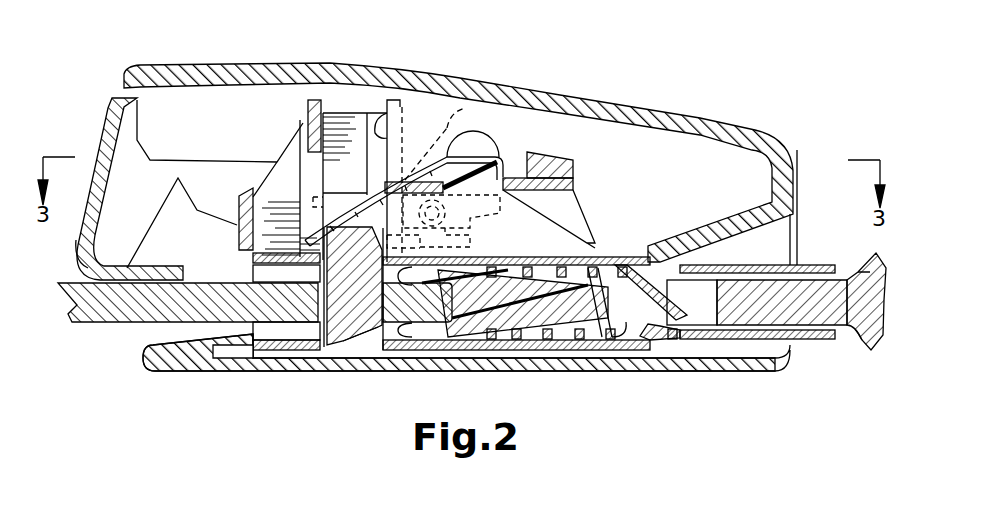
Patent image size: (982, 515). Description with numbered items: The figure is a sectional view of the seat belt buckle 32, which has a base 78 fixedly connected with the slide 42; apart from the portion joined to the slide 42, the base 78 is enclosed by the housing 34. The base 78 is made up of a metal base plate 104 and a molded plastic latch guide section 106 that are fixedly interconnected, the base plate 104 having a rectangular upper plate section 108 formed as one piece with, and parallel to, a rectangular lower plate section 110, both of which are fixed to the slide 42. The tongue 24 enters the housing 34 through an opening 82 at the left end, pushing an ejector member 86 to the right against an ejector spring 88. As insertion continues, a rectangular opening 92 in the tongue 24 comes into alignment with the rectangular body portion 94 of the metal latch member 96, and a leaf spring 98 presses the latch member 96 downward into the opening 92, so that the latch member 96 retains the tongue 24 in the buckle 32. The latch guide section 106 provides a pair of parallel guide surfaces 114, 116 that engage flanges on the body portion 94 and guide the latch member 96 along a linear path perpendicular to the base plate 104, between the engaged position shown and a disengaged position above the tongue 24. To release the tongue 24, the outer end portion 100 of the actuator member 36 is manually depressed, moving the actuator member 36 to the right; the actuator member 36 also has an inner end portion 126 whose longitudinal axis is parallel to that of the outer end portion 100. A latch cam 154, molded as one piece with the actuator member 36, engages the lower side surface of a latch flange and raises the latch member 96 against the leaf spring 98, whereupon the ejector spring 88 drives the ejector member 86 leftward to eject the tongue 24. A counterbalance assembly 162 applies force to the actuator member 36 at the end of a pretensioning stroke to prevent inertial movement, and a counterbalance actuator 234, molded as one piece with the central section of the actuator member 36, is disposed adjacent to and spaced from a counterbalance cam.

The tongue 24 is at (92, 328).
The buckle 32 is at (696, 88).
The housing 34 is at (553, 88).
The actuator member 36 is at (55, 244).
The slide 42 is at (882, 338).
The base 78 is at (612, 238).
The opening 82 is at (167, 328).
The ejector member 86 is at (523, 303).
The ejector spring 88 is at (623, 347).
The rectangular opening 92 is at (307, 283).
The rectangular body portion 94 is at (337, 313).
The latch member 96 is at (375, 340).
The leaf spring 98 is at (462, 140).
The outer end portion 100 is at (100, 148).
The base plate 104 is at (800, 360).
The latch guide section 106 is at (345, 98).
The upper plate section 108 is at (810, 265).
The lower plate section 110 is at (820, 340).
The guide surface 114 is at (307, 117).
The guide surface 116 is at (375, 125).
The inner end portion 126 is at (580, 177).
The latch cam 154 is at (232, 222).
The counterbalance assembly 162 is at (447, 108).
The counterbalance actuator 234 is at (470, 240).